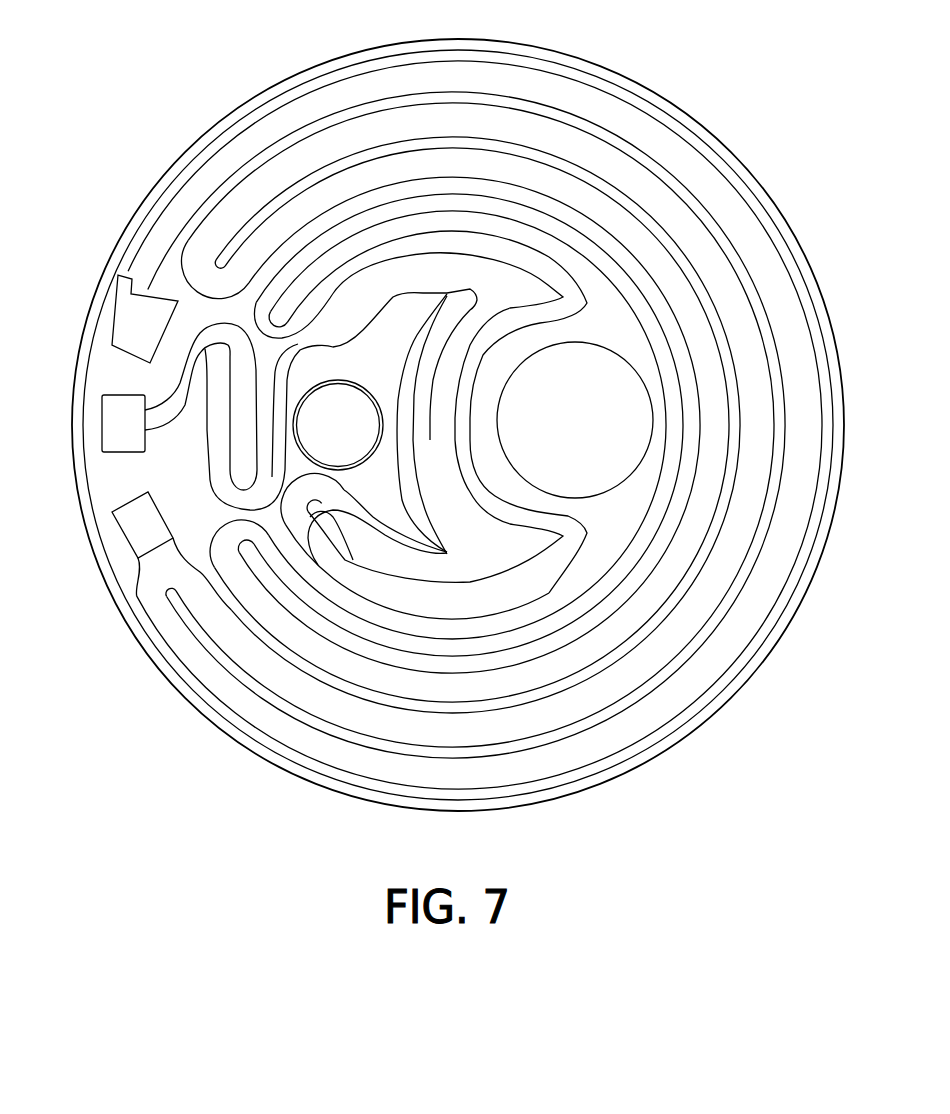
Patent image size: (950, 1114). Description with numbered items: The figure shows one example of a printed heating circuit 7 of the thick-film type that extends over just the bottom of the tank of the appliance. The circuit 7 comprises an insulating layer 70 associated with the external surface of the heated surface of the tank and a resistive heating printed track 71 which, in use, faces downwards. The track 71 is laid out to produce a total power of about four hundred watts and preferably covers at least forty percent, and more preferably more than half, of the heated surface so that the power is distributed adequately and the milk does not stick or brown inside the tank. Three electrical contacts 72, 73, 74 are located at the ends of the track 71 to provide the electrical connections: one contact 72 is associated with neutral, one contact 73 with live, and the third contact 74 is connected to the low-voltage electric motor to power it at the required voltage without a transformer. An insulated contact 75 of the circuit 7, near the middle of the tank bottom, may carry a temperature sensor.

The circuit 7 is at (682, 748).
The insulating layer 70 is at (615, 330).
The resistive heating printed track 71 is at (558, 90).
The electrical contact 72 is at (102, 424).
The electrical contact 73 is at (128, 538).
The electrical contact 74 is at (118, 320).
The insulated contact 75 is at (344, 406).